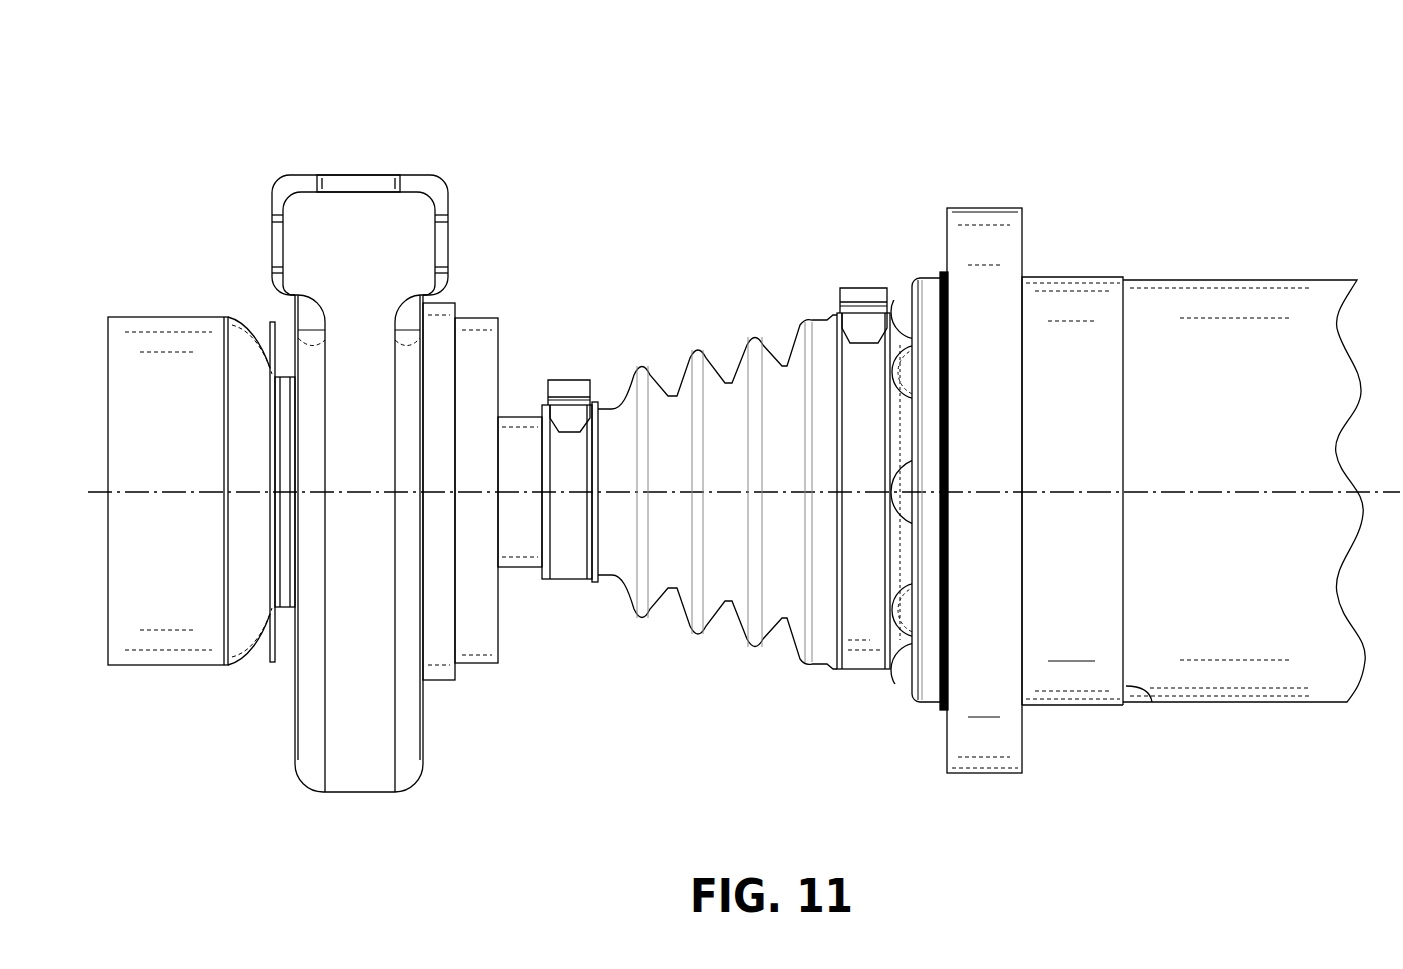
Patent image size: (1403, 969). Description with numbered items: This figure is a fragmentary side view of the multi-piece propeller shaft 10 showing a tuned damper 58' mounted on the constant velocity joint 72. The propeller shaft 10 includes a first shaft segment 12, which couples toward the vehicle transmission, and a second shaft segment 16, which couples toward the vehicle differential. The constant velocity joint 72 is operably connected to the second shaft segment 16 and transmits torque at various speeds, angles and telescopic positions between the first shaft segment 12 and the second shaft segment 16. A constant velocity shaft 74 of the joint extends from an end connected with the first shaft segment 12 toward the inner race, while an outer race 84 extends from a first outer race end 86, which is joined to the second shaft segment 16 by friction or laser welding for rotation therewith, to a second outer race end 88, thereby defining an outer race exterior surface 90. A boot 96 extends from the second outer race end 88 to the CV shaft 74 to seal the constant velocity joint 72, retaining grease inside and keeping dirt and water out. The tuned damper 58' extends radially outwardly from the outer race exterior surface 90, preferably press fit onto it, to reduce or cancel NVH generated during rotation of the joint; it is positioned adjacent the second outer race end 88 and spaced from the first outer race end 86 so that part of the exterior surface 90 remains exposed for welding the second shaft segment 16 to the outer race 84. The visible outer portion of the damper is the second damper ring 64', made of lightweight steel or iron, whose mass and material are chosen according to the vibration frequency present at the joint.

The multi-piece propeller shaft 10 is at (1213, 116).
The first shaft segment 12 is at (167, 667).
The second shaft segment 16 is at (1242, 280).
The tuned damper 58' is at (990, 484).
The second damper ring 64' is at (994, 436).
The constant velocity joint 72 is at (885, 670).
The constant velocity shaft 74 is at (515, 567).
The outer race 84 is at (1067, 277).
The first outer race end 86 is at (1152, 702).
The second outer race end 88 is at (912, 707).
The outer race exterior surface 90 is at (1078, 707).
The boot 96 is at (718, 355).